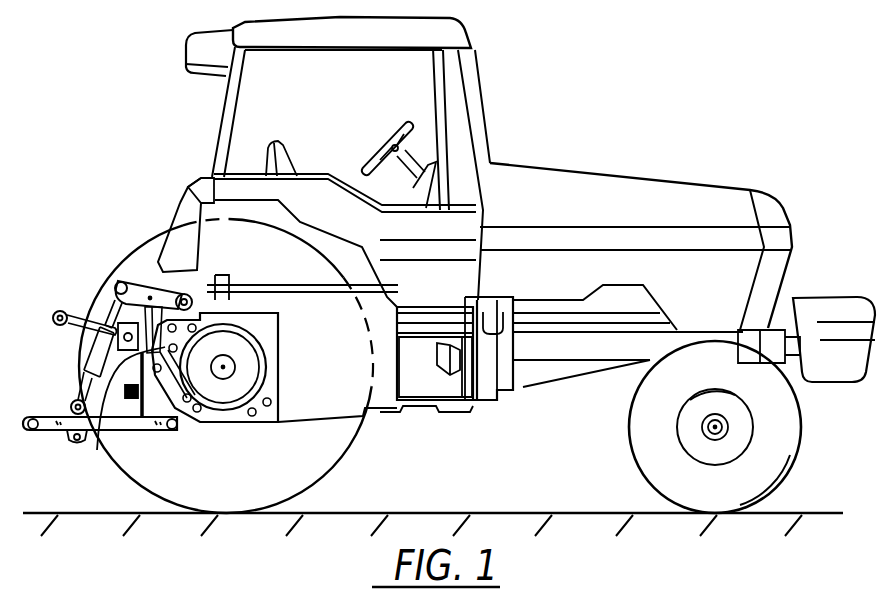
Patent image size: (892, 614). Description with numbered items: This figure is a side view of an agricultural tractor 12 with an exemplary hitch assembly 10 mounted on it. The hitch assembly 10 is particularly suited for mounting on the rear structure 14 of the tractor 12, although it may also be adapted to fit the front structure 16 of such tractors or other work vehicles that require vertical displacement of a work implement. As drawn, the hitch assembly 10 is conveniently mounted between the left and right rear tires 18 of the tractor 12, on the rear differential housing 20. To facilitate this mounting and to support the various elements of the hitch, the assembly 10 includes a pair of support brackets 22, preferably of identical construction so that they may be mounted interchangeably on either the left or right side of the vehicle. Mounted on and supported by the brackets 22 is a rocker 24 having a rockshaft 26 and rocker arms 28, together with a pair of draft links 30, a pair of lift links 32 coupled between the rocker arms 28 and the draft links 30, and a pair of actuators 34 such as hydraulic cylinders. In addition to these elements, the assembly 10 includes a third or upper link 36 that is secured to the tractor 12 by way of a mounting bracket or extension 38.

The hitch assembly 10 is at (103, 273).
The agricultural tractor 12 is at (530, 265).
The rear structure 14 is at (178, 200).
The front structure 16 is at (777, 202).
The rear tires 18 is at (322, 478).
The rear differential housing 20 is at (280, 389).
The support brackets 22 is at (198, 428).
The rocker 24 is at (148, 280).
The rockshaft 26 is at (190, 292).
The rocker arms 28 is at (128, 283).
The draft links 30 is at (43, 432).
The lift links 32 is at (85, 377).
The actuators 34 is at (97, 450).
The upper link 36 is at (86, 321).
The mounting bracket 38 is at (100, 347).